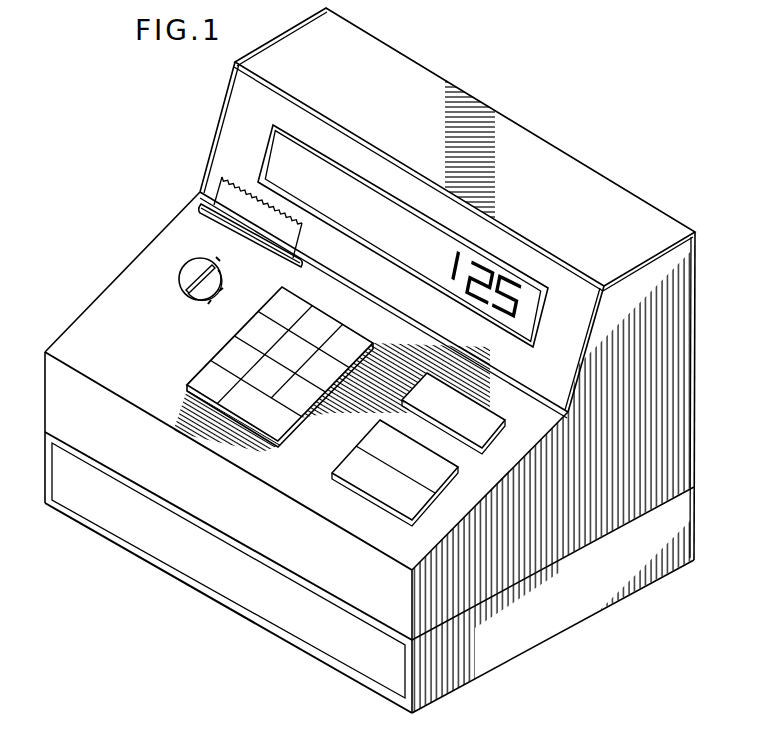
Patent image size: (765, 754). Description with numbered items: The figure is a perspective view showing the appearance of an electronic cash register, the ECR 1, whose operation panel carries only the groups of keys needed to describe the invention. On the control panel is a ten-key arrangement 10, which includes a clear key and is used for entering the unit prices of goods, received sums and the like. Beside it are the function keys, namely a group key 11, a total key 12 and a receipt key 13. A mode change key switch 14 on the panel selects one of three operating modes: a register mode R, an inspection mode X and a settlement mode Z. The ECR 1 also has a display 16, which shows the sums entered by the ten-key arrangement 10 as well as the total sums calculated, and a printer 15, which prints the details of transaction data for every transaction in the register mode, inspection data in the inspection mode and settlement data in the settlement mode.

The ECR 1 is at (632, 180).
The ten-key arrangement 10 is at (197, 382).
The group key 11 is at (497, 435).
The total key 12 is at (458, 470).
The receipt key 13 is at (420, 507).
The mode change key switch 14 is at (187, 264).
The printer 15 is at (200, 198).
The display 16 is at (539, 326).